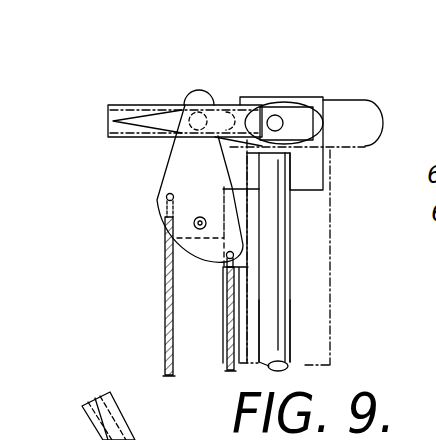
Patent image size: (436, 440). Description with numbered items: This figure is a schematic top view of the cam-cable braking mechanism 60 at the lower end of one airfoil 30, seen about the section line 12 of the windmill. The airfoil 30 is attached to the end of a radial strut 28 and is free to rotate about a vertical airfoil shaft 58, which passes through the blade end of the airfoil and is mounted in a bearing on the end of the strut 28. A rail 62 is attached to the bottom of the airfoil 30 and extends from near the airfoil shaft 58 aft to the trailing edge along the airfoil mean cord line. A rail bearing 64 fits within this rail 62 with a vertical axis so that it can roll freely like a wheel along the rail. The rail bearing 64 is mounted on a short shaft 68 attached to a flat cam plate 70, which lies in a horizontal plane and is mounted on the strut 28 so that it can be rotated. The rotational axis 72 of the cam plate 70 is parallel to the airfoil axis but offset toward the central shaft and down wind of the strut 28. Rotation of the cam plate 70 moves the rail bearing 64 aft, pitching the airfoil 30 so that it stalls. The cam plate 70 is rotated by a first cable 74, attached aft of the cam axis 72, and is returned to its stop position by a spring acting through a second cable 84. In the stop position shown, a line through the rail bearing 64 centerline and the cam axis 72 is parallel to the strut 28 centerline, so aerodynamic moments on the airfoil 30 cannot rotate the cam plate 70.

The section line 12- 12 is at (115, 338).
The radial strut 28 is at (278, 323).
The airfoil 30 is at (385, 110).
The airfoil shaft 58 is at (280, 116).
The cam-cable braking mechanism 60 is at (229, 197).
The rail 62 is at (128, 108).
The rail bearing 64 is at (230, 103).
The short shaft 68 is at (182, 212).
The cam plate 70 is at (180, 155).
The rotational axis 72 is at (199, 229).
The first cable 74 is at (167, 265).
The second cable 84 is at (226, 317).